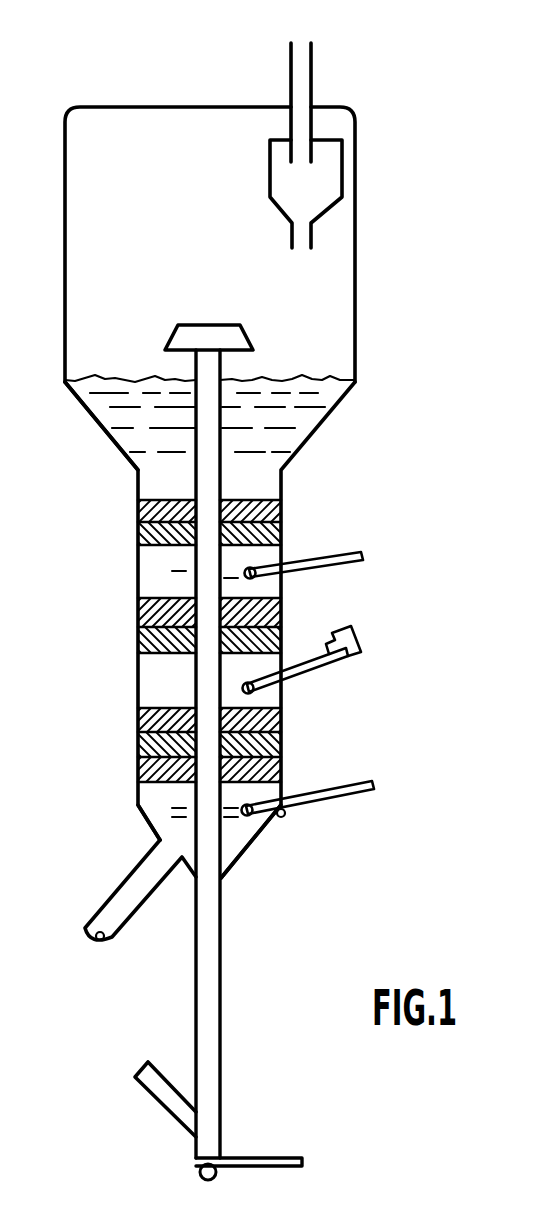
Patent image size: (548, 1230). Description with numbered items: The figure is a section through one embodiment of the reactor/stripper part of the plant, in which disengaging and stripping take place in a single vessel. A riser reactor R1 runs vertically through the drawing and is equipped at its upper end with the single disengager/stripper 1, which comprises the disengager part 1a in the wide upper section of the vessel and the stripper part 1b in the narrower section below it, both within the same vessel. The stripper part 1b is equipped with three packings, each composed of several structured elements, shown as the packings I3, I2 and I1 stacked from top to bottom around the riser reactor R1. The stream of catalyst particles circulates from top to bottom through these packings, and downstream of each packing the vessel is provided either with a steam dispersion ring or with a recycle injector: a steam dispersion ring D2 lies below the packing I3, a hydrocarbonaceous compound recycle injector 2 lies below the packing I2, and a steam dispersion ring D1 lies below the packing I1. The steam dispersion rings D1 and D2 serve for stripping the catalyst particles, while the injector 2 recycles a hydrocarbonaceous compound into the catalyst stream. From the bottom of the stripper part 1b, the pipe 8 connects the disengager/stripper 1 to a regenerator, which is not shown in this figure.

The disengager/stripper 1 is at (355, 323).
The disengager part 1a is at (90, 414).
The stripper part 1b is at (138, 793).
The packing I3 is at (285, 498).
The packing I2 is at (285, 593).
The packing I1 is at (287, 708).
The steam dispersion ring D2 is at (343, 567).
The steam dispersion ring D1 is at (335, 797).
The hydrocarbonaceous compound recycle injector 2 is at (347, 663).
The pipe 8 is at (130, 900).
The riser reactor R1 is at (220, 1045).